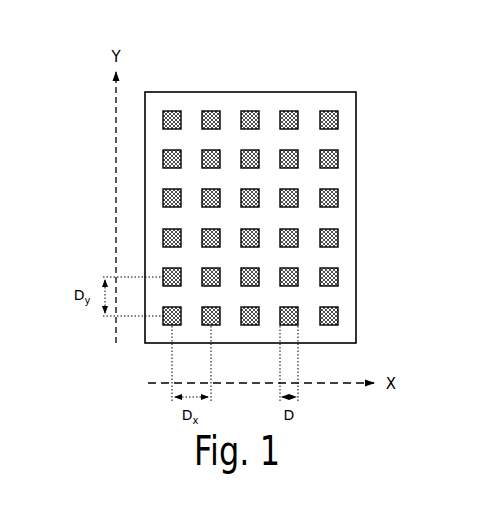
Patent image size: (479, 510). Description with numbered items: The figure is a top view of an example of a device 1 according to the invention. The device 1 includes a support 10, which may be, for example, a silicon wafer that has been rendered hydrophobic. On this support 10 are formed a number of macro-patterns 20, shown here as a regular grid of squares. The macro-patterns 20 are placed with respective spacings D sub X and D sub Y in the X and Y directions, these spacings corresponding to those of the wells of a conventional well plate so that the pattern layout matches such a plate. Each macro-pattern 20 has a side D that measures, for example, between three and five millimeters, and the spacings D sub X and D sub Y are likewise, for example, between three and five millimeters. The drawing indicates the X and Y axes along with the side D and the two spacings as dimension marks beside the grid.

The device 1 is at (383, 81).
The support 10 is at (156, 137).
The macro-patterns 20 is at (340, 315).